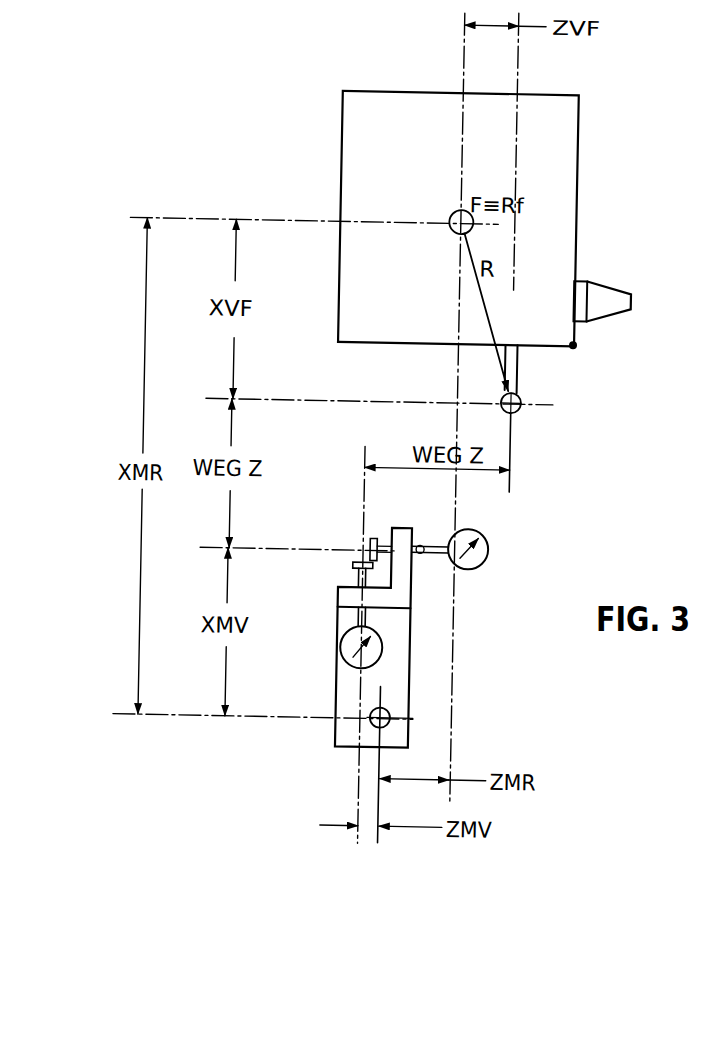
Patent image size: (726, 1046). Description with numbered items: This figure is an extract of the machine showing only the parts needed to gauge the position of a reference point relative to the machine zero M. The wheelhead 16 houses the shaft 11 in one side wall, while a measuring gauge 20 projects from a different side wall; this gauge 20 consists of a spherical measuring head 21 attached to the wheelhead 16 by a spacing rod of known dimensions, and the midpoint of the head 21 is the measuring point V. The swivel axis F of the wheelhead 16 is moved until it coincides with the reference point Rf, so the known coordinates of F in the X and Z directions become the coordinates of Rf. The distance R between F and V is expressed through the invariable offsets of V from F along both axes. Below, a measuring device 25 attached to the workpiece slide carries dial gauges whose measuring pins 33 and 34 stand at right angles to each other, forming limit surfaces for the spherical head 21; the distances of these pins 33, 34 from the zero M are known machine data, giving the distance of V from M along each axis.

The wheelhead 16 is at (334, 148).
The shaft 11 is at (593, 276).
The measuring gauge 20 is at (520, 363).
The spherical measuring head 21 is at (516, 411).
The measuring device 25 is at (381, 685).
The measuring pin 33 is at (359, 583).
The measuring pin 34 is at (417, 555).